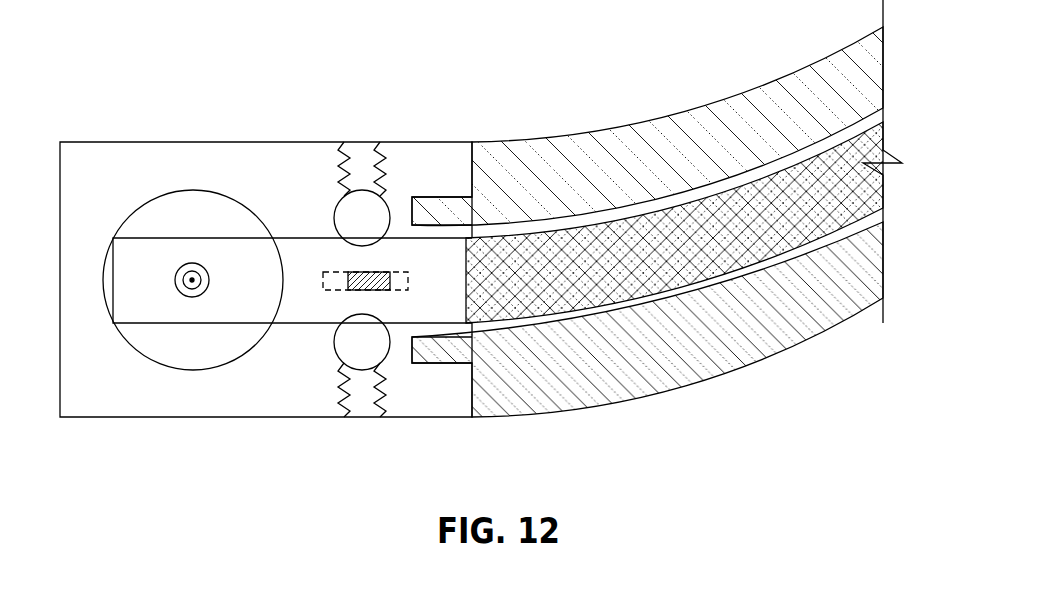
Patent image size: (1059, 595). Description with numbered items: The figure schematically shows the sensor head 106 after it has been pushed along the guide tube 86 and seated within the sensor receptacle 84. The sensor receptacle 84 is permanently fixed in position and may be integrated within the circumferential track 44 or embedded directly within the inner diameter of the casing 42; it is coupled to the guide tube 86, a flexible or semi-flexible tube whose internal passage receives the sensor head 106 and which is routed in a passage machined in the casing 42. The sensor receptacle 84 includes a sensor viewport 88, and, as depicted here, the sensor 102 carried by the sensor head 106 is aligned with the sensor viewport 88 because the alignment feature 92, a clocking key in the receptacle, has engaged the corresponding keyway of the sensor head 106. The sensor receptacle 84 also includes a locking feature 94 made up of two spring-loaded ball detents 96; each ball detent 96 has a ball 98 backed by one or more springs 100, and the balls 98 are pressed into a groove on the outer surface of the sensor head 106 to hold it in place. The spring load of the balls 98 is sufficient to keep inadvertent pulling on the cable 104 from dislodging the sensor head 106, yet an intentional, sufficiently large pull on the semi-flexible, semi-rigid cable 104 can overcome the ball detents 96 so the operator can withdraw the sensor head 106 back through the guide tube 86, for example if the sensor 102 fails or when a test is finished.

The casing 42 is at (266, 322).
The circumferential track 44 is at (266, 322).
The sensor receptacle 84 is at (209, 436).
The guide tube 86 is at (782, 362).
The sensor viewport 88 is at (248, 192).
The alignment feature 92 is at (395, 215).
The locking feature 94 is at (322, 329).
The spring-loaded ball detent 96 is at (325, 250).
The ball 98 is at (399, 261).
The spring 100 is at (388, 197).
The sensor 102 is at (204, 258).
The cable 104 is at (677, 257).
The sensor head 106 is at (152, 228).